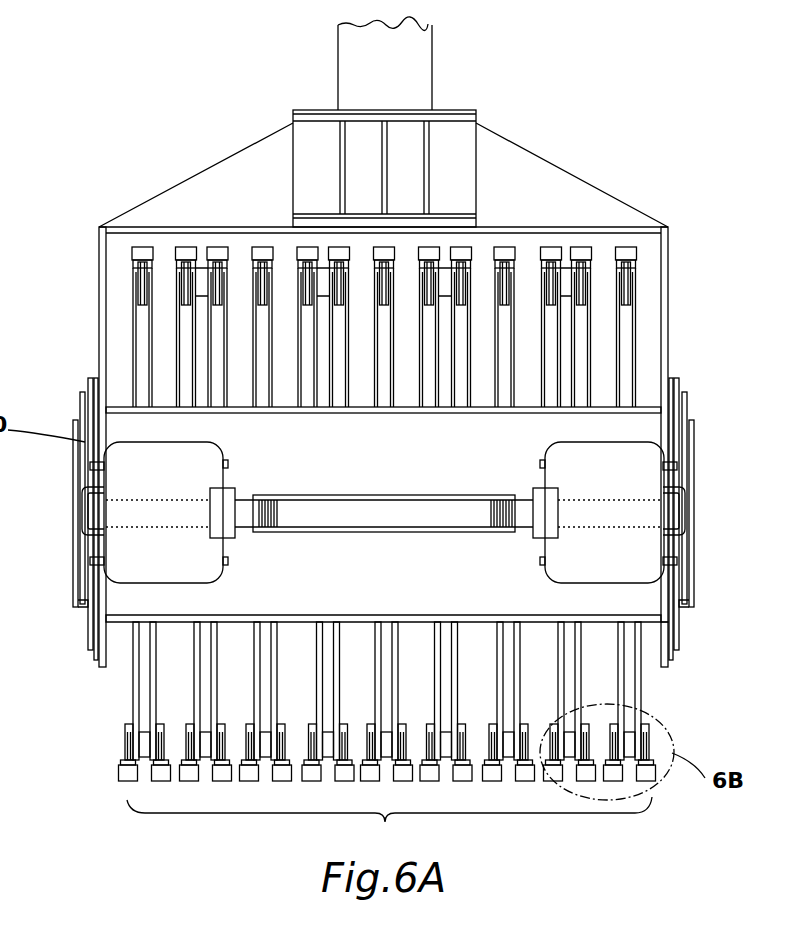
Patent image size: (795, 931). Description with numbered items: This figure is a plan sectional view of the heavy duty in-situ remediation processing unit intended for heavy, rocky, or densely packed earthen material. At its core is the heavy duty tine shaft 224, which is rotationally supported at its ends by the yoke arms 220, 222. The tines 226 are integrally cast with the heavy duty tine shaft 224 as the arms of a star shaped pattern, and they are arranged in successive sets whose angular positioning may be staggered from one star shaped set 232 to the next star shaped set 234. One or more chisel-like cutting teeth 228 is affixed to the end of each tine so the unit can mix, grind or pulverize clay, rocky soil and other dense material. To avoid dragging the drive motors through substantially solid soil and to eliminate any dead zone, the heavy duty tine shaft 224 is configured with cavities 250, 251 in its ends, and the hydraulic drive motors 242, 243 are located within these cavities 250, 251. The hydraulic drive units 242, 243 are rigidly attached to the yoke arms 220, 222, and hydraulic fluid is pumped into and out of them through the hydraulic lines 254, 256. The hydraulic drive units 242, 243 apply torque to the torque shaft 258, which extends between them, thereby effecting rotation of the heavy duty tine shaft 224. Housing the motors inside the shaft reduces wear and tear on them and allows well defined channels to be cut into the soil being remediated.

The yoke arm 220 is at (98, 268).
The yoke arm 222 is at (668, 268).
The heavy duty tine shaft 224 is at (650, 622).
The tines 226 is at (339, 737).
The cutting teeth 228 is at (281, 781).
The star shaped set 232 is at (133, 684).
The star shaped set 234 is at (197, 705).
The hydraulic drive motor 242 is at (127, 446).
The hydraulic drive motor 243 is at (597, 442).
The cavity 250 is at (122, 603).
The cavity 251 is at (615, 597).
The hydraulic line 254 is at (84, 437).
The hydraulic line 256 is at (85, 516).
The torque shaft 258 is at (368, 496).